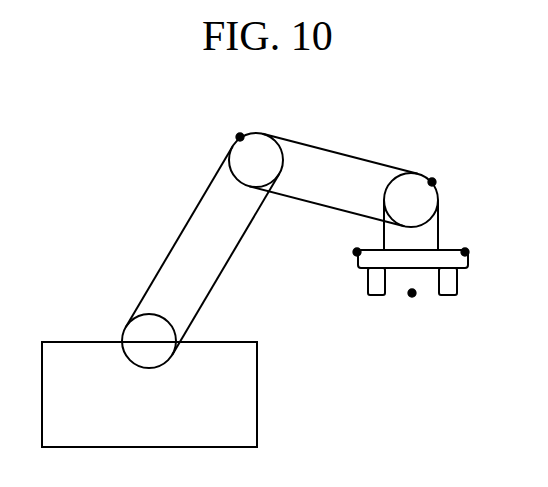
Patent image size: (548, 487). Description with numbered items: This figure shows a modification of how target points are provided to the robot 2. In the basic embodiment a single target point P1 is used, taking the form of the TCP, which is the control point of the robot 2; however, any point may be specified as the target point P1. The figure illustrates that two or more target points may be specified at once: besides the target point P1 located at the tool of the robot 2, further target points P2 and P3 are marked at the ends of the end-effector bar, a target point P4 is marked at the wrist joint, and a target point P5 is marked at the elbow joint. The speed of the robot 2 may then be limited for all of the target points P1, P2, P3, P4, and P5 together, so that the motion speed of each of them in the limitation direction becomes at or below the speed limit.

The robot 2 is at (108, 174).
The target point P1 is at (413, 312).
The target point P2 is at (484, 253).
The target point P3 is at (340, 253).
The target point P4 is at (443, 169).
The target point P5 is at (228, 121).